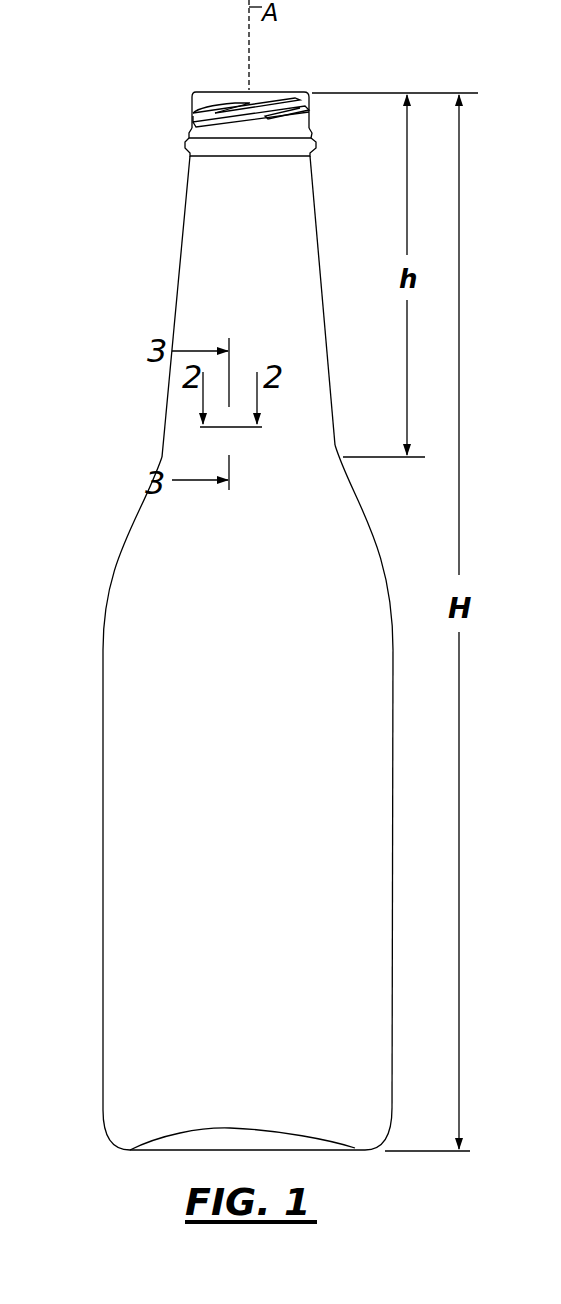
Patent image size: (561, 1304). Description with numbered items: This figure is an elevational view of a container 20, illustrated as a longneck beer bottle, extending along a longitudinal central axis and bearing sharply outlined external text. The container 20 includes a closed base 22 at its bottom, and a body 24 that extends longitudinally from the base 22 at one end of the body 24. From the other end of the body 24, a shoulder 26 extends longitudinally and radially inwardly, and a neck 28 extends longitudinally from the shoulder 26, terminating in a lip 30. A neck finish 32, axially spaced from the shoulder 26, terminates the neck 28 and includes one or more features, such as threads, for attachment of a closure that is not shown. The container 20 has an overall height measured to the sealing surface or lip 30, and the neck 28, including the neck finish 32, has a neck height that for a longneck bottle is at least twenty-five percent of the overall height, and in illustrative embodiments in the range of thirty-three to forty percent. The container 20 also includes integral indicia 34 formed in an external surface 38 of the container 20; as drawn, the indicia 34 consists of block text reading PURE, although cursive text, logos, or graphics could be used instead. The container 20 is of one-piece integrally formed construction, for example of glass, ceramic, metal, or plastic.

The container 20 is at (170, 53).
The closed base 22 is at (350, 1155).
The body 24 is at (81, 858).
The shoulder 26 is at (108, 546).
The neck 28 is at (158, 231).
The lip 30 is at (298, 90).
The neck finish 32 is at (178, 100).
The integral indicia 34 is at (320, 381).
The external surface 38 is at (257, 455).